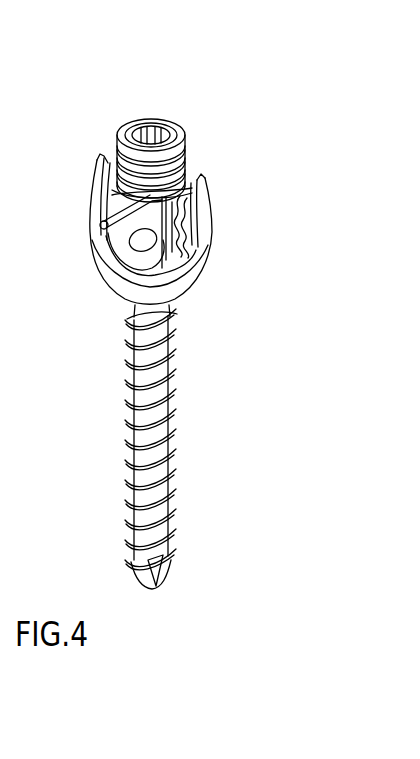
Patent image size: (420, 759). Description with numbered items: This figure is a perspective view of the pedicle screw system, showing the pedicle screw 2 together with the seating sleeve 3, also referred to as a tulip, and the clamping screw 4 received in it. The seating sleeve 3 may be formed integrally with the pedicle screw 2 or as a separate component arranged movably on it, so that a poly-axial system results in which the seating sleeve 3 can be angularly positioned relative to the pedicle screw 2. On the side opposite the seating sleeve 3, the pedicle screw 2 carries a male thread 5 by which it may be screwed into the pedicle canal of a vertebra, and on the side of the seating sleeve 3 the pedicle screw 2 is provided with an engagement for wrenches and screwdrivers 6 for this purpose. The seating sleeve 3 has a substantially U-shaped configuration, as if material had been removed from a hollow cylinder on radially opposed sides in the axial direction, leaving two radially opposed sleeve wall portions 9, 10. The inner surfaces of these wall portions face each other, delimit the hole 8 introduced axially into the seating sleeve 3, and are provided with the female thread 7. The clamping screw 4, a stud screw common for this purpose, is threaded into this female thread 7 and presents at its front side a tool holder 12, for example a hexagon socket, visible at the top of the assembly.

The pedicle screw 2 is at (168, 402).
The seating sleeve 3 is at (212, 304).
The clamping screw 4 is at (173, 126).
The male thread 5 is at (176, 362).
The engagement for wrenches and screwdrivers 6 is at (197, 243).
The female thread 7 is at (152, 201).
The hole 8 is at (140, 233).
The sleeve wall portion 9 is at (100, 185).
The sleeve wall portion 10 is at (208, 205).
The tool holder 12 is at (152, 121).